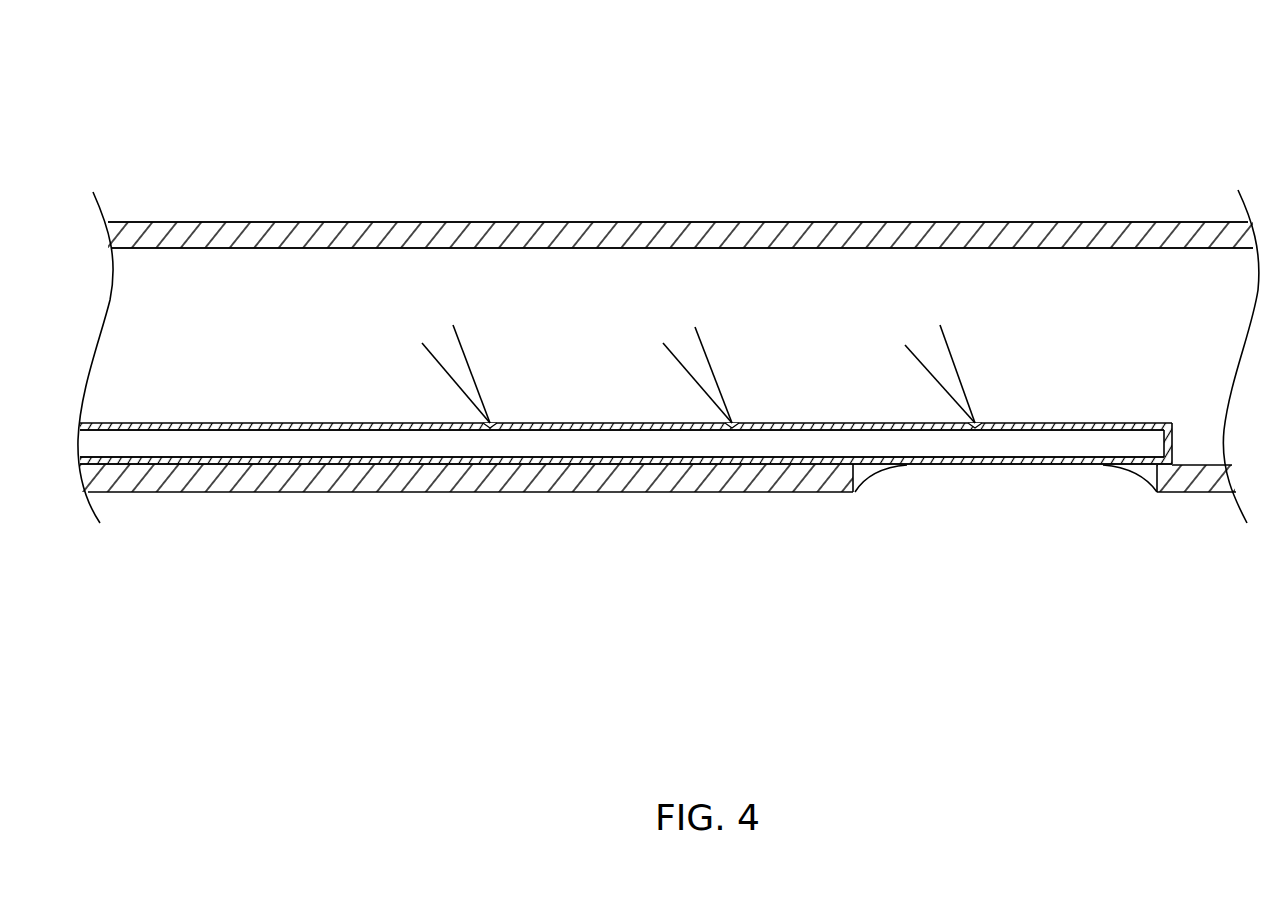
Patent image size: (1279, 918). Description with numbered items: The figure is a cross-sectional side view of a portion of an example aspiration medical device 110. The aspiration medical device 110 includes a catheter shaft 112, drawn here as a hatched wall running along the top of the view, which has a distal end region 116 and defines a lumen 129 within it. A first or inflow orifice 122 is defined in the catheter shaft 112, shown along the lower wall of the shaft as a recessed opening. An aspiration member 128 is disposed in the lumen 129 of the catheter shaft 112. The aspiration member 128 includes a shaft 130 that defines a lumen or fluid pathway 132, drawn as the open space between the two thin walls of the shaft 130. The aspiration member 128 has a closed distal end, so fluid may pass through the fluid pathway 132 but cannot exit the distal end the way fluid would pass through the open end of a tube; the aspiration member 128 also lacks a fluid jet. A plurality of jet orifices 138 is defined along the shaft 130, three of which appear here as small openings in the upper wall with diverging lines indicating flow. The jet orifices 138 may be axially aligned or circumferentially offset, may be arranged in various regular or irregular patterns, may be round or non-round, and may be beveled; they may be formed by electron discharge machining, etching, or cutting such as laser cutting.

The aspiration medical device 110 is at (805, 68).
The catheter shaft 112 is at (388, 208).
The distal end region 116 is at (678, 222).
The lumen 129 is at (276, 270).
The aspiration member 128 is at (268, 405).
The shaft 130 is at (277, 458).
The fluid pathway 132 is at (682, 443).
The inflow orifice 122 is at (1008, 482).
The jet orifices 138 is at (493, 422).